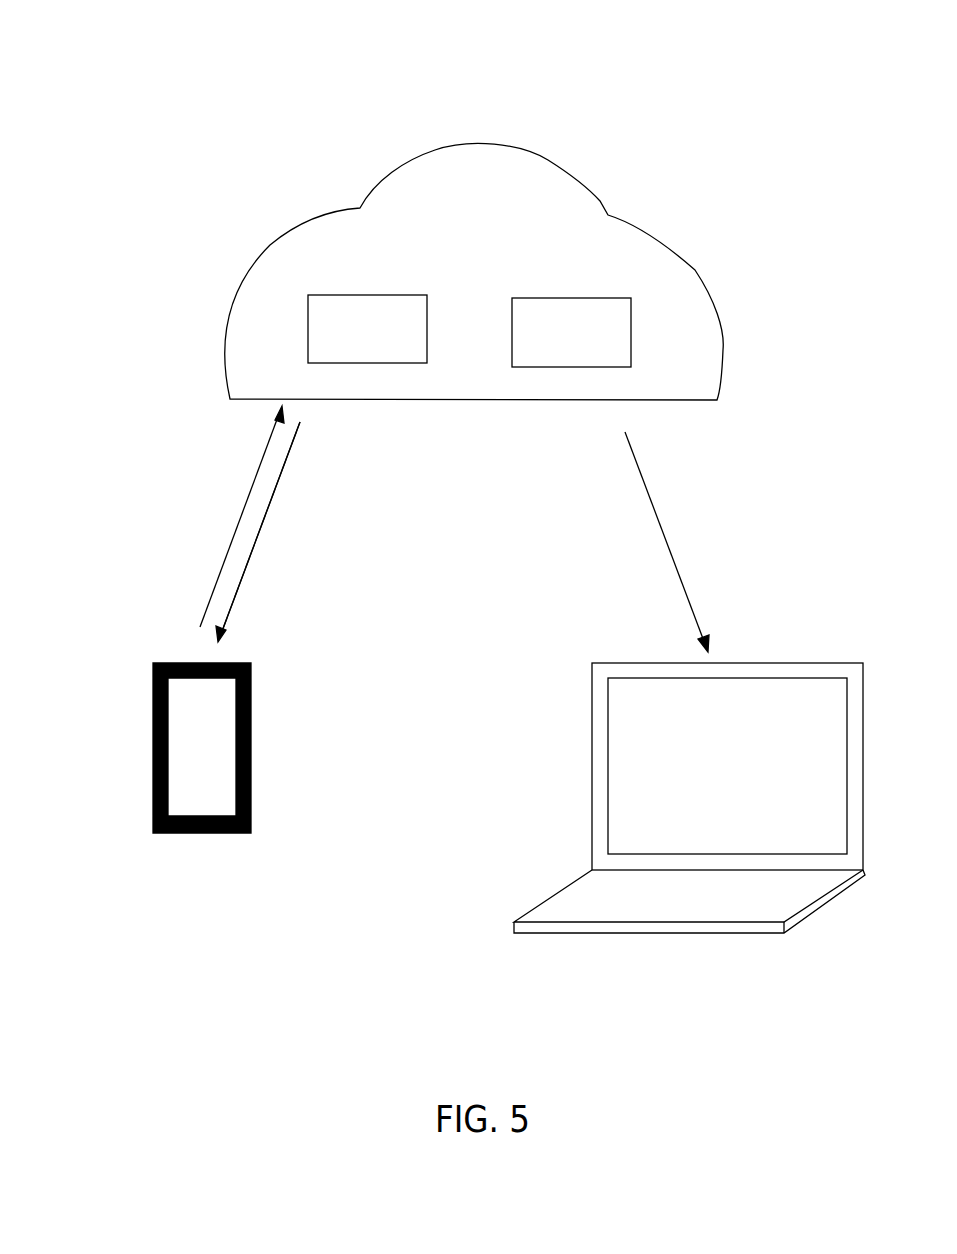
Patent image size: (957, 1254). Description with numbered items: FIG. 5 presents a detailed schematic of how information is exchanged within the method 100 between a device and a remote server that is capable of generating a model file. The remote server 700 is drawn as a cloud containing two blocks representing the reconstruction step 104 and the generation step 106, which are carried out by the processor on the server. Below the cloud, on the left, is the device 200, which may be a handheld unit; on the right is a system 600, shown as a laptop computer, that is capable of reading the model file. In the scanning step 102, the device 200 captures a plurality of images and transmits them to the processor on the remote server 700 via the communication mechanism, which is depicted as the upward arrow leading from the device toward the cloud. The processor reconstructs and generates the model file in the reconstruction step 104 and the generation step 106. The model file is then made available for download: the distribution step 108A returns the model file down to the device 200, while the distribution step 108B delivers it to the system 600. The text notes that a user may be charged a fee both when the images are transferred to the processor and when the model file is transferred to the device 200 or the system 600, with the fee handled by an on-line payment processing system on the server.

The method 100 is at (222, 168).
The reconstruction step 104 is at (308, 327).
The generation step 106 is at (631, 331).
The remote server 700 is at (600, 201).
The scanning step 102 is at (228, 547).
The distribution step to the device 108A is at (277, 480).
The distribution step to the system 108B is at (663, 523).
The device 200 is at (152, 732).
The system 600 is at (592, 737).